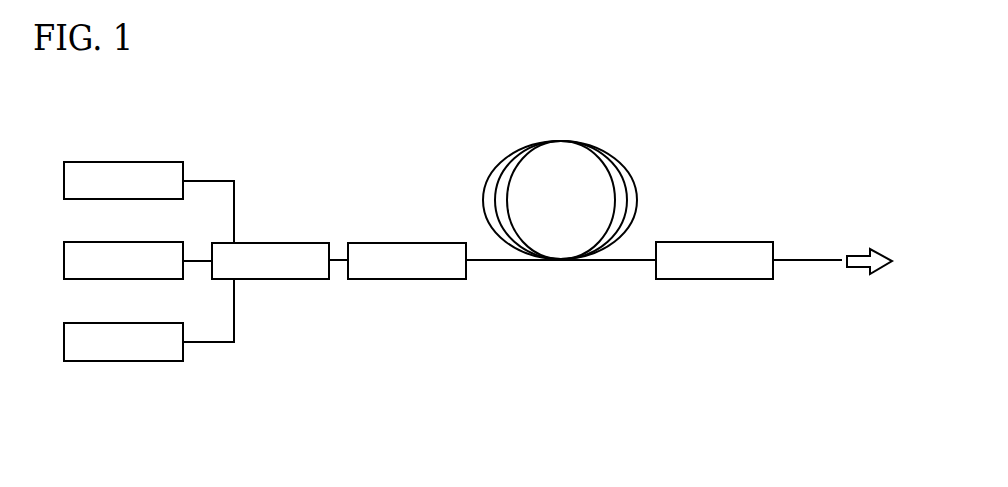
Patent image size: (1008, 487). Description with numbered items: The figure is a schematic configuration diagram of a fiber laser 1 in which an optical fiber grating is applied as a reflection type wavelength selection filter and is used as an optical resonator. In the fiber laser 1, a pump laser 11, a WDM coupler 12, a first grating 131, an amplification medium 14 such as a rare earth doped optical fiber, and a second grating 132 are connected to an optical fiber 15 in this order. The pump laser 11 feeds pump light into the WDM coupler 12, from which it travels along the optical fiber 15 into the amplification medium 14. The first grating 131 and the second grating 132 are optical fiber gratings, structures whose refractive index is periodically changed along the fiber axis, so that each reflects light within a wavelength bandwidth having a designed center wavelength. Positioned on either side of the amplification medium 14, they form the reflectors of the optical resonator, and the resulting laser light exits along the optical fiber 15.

The fiber laser 1 is at (78, 137).
The pump laser 11 is at (122, 162).
The WDM coupler 12 is at (270, 243).
The first grating 131 is at (406, 243).
The amplification medium 14 is at (628, 166).
The second grating 132 is at (712, 242).
The optical fiber 15 is at (803, 259).